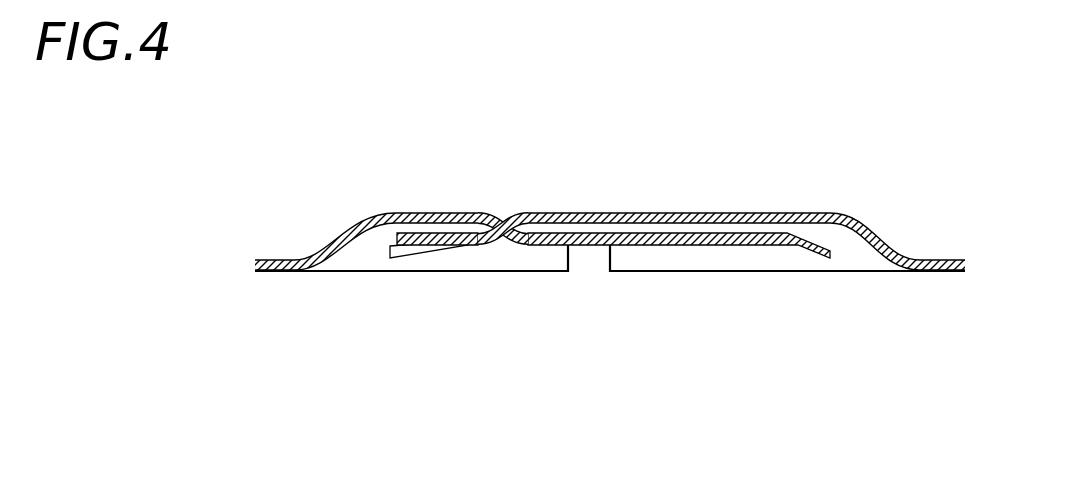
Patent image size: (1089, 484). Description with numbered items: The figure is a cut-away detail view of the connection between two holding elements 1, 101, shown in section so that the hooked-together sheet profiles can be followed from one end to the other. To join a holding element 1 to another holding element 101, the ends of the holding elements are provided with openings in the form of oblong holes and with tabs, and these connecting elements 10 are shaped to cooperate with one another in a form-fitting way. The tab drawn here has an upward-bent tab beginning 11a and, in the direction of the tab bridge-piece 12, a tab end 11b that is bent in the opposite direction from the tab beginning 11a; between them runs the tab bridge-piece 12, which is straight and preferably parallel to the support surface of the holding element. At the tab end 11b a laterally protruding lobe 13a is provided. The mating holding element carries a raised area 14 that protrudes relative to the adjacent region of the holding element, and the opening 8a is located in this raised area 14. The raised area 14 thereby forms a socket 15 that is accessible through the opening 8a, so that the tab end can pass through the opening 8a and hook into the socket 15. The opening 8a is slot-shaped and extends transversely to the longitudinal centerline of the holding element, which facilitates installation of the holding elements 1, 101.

The holding element 1 is at (591, 238).
The holding element 101 is at (960, 248).
The opening 8a is at (518, 244).
The connecting elements 10 is at (507, 206).
The tab beginning 11a is at (868, 258).
The tab end 11b is at (465, 257).
The tab bridge-piece 12 is at (717, 233).
The lobe 13a is at (412, 272).
The raised area 14 is at (423, 204).
The socket 15 is at (368, 257).